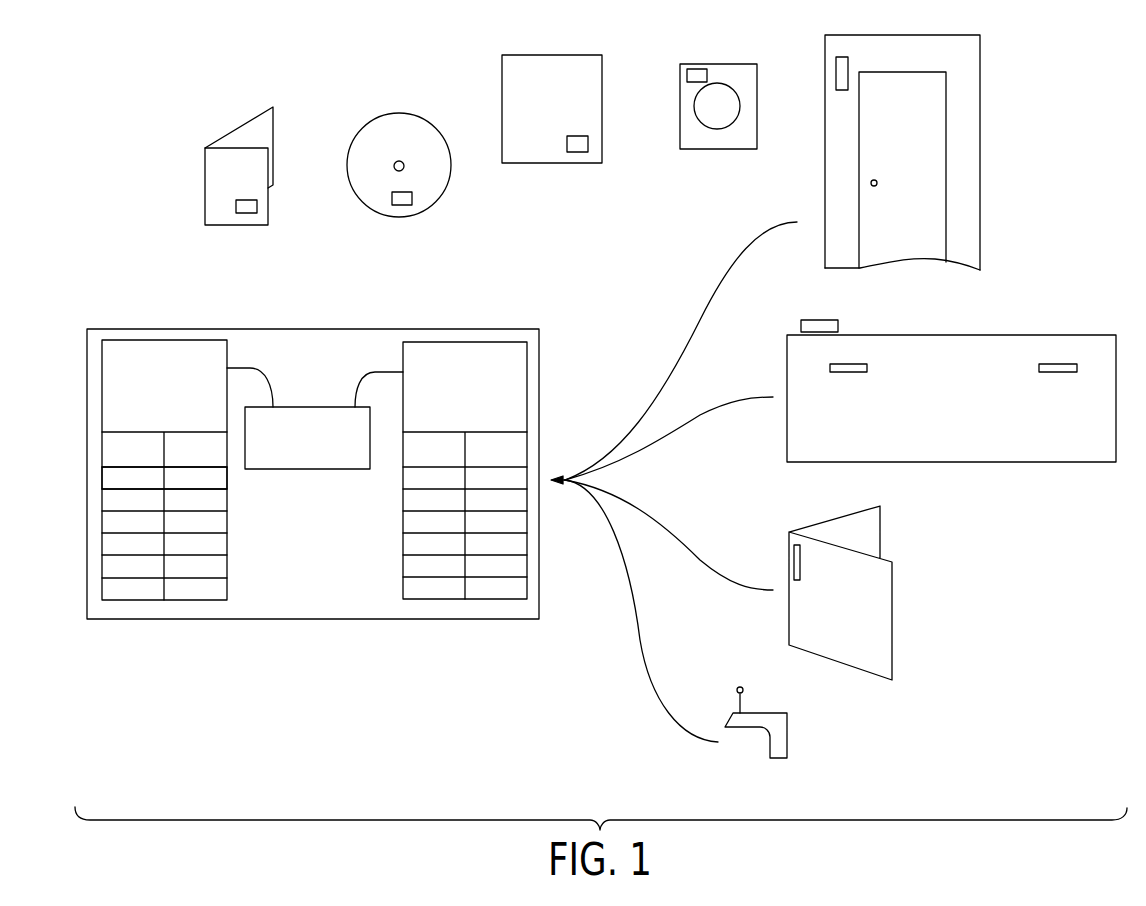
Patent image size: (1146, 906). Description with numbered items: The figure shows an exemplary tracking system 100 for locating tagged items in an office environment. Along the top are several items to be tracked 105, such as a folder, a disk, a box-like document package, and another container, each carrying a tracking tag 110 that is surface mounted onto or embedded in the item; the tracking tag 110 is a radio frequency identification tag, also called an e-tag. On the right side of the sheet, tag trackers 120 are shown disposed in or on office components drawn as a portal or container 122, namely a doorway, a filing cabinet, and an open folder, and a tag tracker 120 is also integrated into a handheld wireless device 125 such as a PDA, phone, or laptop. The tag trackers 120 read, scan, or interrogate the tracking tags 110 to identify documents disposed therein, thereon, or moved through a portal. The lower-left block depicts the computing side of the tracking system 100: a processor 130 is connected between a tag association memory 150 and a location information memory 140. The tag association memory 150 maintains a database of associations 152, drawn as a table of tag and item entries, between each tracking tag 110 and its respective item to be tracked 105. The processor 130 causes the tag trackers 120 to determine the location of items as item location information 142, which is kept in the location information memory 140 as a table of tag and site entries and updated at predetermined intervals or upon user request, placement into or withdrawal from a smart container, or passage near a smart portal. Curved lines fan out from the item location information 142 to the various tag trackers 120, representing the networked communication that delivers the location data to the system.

The tracking system 100 is at (404, 732).
The item to be tracked 105 is at (248, 133).
The tracking tag 110 is at (248, 210).
The tag tracker 120 is at (836, 75).
The portal or container 122 is at (978, 152).
The wireless device 125 is at (754, 742).
The processor 130 is at (310, 406).
The location information memory 140 is at (447, 342).
The item location information 142 is at (522, 479).
The tag association memory 150 is at (140, 340).
The associations 152 is at (107, 477).